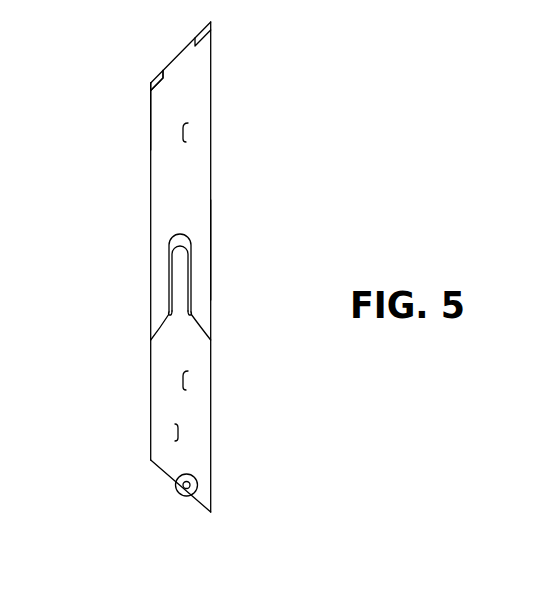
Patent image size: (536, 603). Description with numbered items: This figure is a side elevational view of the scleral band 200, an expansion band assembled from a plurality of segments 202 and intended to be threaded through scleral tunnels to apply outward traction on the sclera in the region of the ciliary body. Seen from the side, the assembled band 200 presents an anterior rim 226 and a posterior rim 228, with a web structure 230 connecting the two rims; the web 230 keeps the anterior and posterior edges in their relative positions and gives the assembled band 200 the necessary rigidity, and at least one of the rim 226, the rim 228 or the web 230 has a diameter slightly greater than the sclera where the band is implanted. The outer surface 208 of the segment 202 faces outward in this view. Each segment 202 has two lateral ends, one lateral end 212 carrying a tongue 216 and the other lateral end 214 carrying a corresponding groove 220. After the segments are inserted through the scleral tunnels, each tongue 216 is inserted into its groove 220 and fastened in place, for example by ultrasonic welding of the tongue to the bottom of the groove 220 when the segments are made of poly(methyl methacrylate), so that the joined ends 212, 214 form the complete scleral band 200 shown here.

The scleral band 200 is at (238, 45).
The segment 202 is at (211, 178).
The outer surface 208 is at (186, 132).
The lateral end 212 is at (151, 113).
The lateral end 214 is at (167, 314).
The tongue 216 is at (172, 252).
The groove 220 is at (172, 233).
The anterior rim 226 is at (151, 196).
The posterior rim 228 is at (211, 243).
The web structure 230 is at (175, 432).